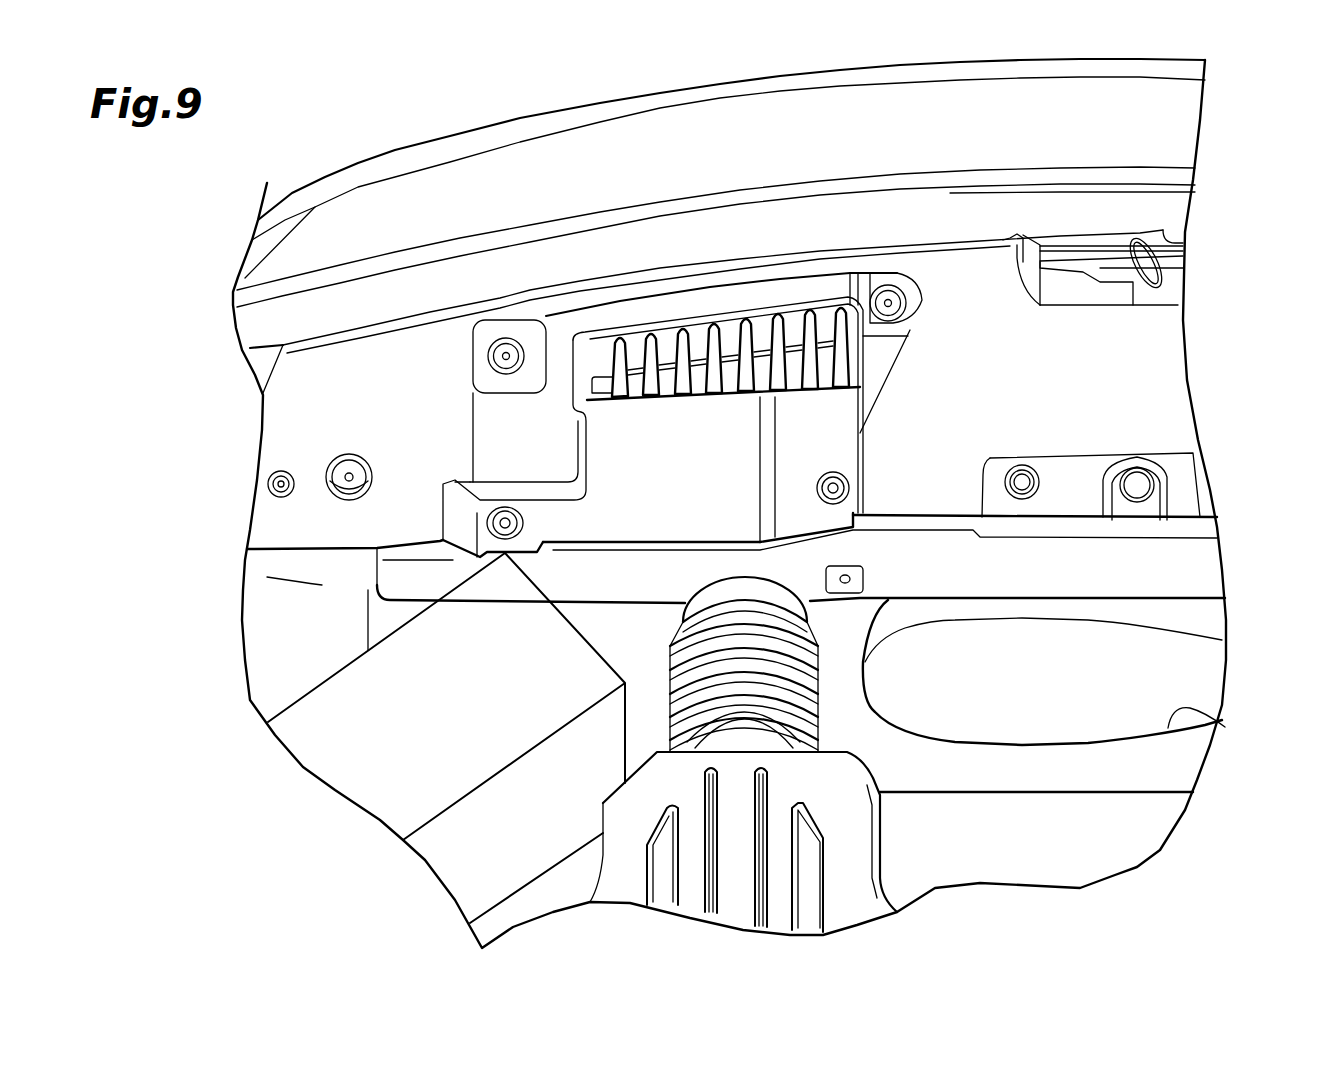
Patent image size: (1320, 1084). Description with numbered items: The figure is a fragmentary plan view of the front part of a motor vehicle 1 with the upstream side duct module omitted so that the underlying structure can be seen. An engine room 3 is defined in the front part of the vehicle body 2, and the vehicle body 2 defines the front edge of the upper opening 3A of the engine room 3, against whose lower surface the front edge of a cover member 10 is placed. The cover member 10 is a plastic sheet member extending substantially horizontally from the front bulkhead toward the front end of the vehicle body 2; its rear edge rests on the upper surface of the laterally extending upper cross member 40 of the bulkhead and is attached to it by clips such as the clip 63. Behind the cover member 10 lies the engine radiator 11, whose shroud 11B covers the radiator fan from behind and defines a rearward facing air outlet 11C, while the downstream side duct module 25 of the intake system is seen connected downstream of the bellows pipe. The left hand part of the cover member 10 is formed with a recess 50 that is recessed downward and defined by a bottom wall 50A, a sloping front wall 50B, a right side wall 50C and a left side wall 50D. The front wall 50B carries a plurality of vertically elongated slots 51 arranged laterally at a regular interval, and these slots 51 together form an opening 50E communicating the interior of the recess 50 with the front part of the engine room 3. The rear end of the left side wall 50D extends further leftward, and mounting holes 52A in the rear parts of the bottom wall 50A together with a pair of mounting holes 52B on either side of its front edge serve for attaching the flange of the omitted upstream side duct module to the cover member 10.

The motor vehicle 1 is at (772, 495).
The vehicle body 2 is at (747, 183).
The engine room 3 is at (1080, 870).
The upper opening 3A is at (1132, 269).
The cover member 10 is at (751, 407).
The engine radiator 11 is at (791, 700).
The shroud 11B is at (1113, 780).
The air outlet 11C is at (1225, 727).
The downstream side duct module 25 is at (709, 754).
The upper cross member 40 is at (920, 533).
The recess 50 is at (600, 375).
The bottom wall 50A is at (633, 520).
The front wall 50B is at (728, 327).
The right side wall 50C is at (853, 520).
The left side wall 50D is at (455, 480).
The opening 50E is at (610, 357).
The slots 51 is at (614, 363).
The mounting holes 52A is at (658, 502).
The mounting holes 52B is at (952, 334).
The clip 63 is at (1128, 477).